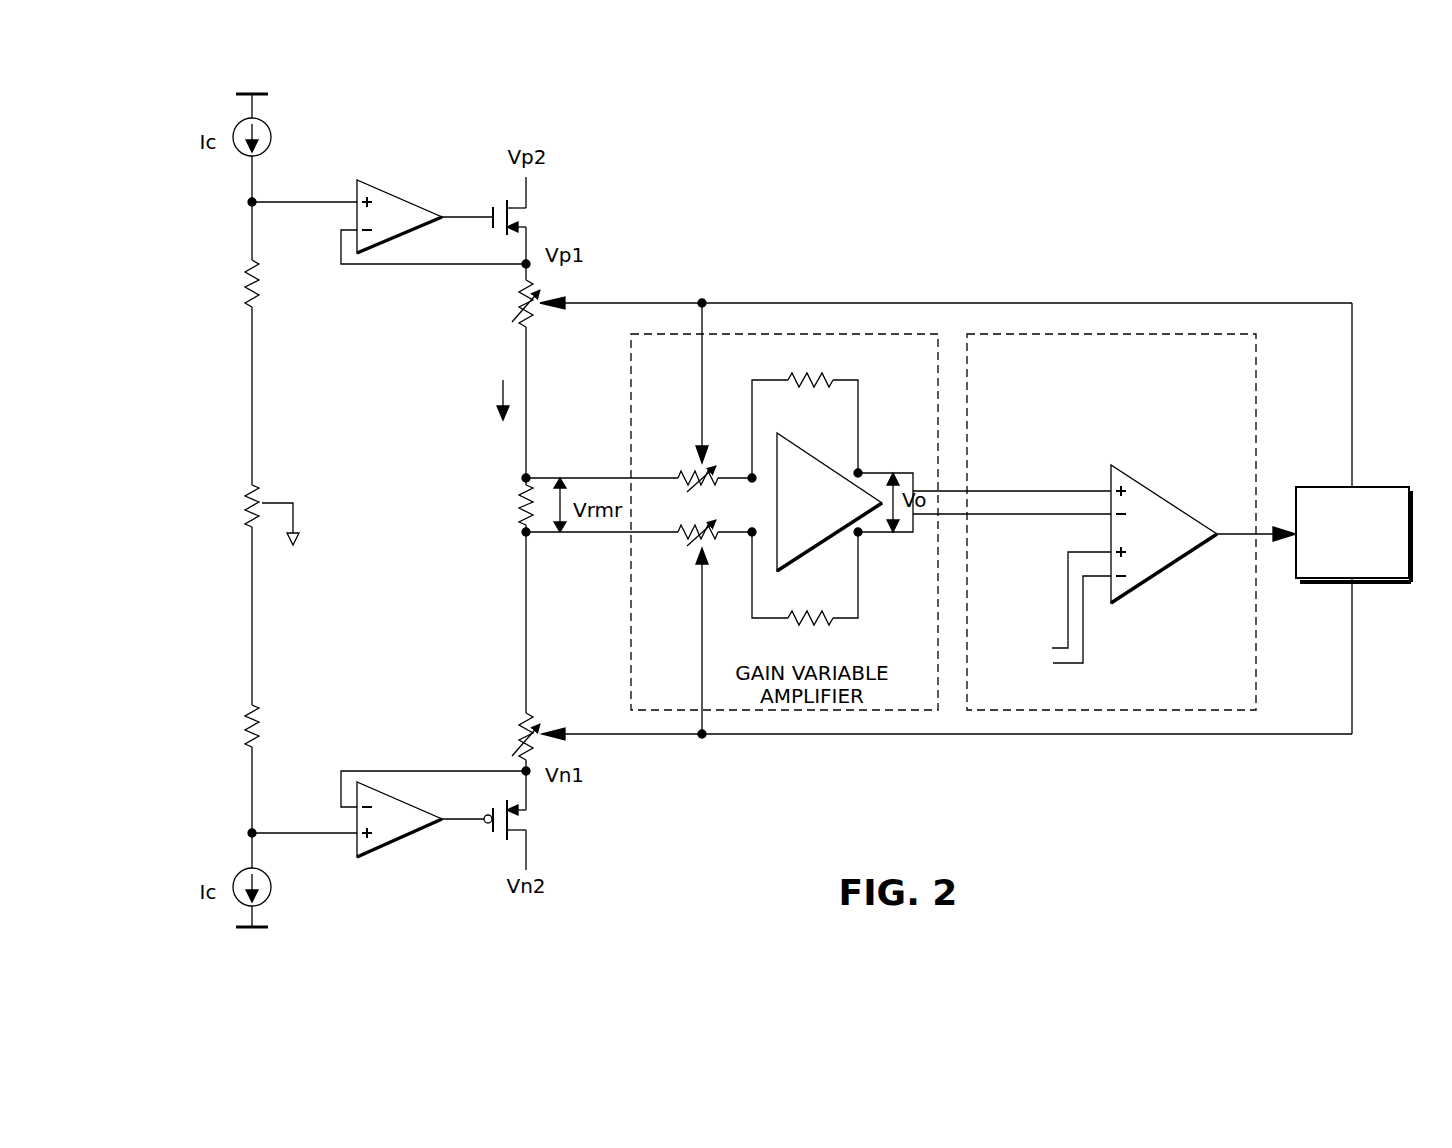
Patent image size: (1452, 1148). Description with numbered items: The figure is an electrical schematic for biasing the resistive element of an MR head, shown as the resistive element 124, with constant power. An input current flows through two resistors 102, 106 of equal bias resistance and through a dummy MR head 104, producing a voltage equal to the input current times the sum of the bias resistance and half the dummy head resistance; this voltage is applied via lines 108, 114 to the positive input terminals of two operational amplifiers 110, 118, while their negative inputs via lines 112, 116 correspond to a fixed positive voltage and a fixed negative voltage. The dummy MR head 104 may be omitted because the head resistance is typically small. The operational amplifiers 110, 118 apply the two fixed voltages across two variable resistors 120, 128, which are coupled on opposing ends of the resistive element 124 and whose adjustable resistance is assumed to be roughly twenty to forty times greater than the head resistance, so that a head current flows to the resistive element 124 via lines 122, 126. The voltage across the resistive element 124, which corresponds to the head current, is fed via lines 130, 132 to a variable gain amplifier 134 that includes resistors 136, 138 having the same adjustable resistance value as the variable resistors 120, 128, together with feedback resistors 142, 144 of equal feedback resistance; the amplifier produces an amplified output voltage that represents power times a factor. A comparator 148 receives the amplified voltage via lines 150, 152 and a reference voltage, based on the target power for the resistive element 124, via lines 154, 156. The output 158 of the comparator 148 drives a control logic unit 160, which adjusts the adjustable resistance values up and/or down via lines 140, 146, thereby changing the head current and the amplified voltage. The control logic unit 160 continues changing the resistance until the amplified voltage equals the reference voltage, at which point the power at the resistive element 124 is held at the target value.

The resistor 102 is at (241, 268).
The dummy MR head 104 is at (240, 490).
The resistor 106 is at (243, 708).
The line 108 is at (298, 202).
The operational amplifier 110 is at (396, 197).
The line 112 is at (399, 264).
The line 114 is at (290, 833).
The line 116 is at (380, 771).
The operational amplifier 118 is at (396, 840).
The variable resistor 120 is at (511, 310).
The line 122 is at (526, 426).
The RMR 124 is at (519, 524).
The line 126 is at (526, 602).
The variable resistor 128 is at (511, 727).
The line 130 is at (549, 478).
The line 132 is at (549, 532).
The variable gain amplifier 134 is at (737, 711).
The resistor 136 is at (728, 468).
The resistor 138 is at (717, 542).
The line 140 is at (787, 303).
The resistor 142 is at (816, 366).
The resistor 144 is at (822, 632).
The line 146 is at (828, 736).
The comparator 148 is at (1063, 711).
The line 150 is at (990, 491).
The line 152 is at (994, 514).
The line 154 is at (1068, 613).
The line 156 is at (1083, 637).
The output 158 is at (1226, 532).
The control logic unit 160 is at (1382, 487).